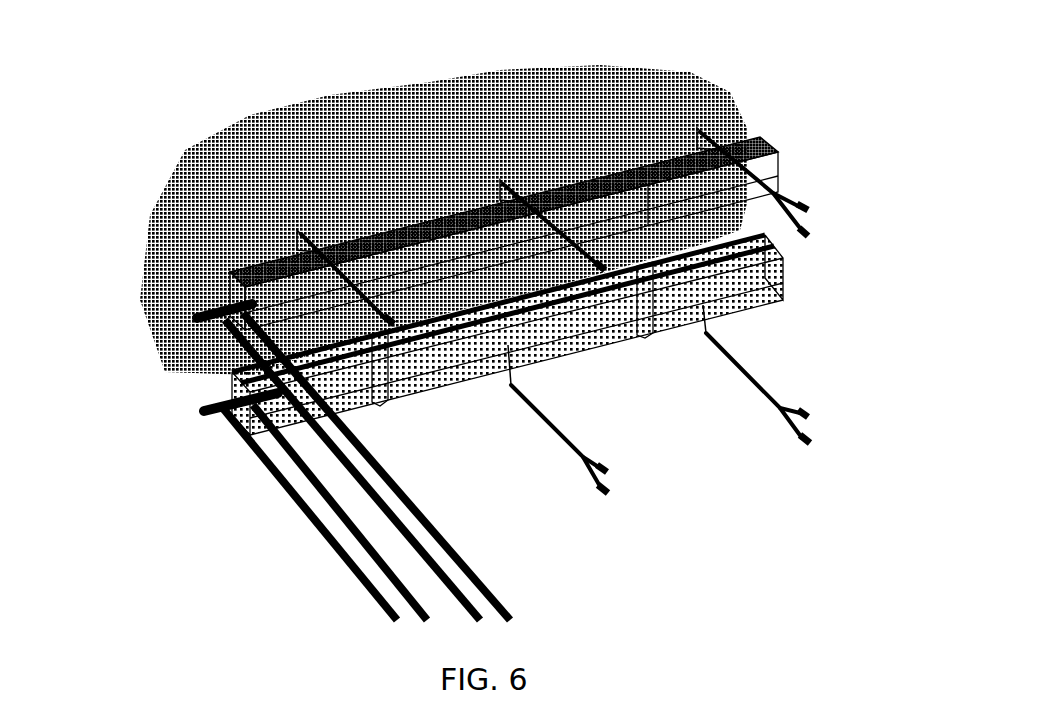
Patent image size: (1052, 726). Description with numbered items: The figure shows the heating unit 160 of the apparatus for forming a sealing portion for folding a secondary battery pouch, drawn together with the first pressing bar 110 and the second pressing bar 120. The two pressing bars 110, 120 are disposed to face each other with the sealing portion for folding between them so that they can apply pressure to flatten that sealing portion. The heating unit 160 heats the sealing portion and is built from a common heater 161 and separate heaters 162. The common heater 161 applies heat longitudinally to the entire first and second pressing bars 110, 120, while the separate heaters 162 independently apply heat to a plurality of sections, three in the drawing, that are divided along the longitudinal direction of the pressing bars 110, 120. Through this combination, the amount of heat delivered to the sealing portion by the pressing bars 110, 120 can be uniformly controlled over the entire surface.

The heating unit 160 is at (61, 98).
The first pressing bar 110 is at (277, 243).
The second pressing bar 120 is at (437, 385).
The common heater 161 is at (198, 308).
The separate heaters 162 is at (362, 255).